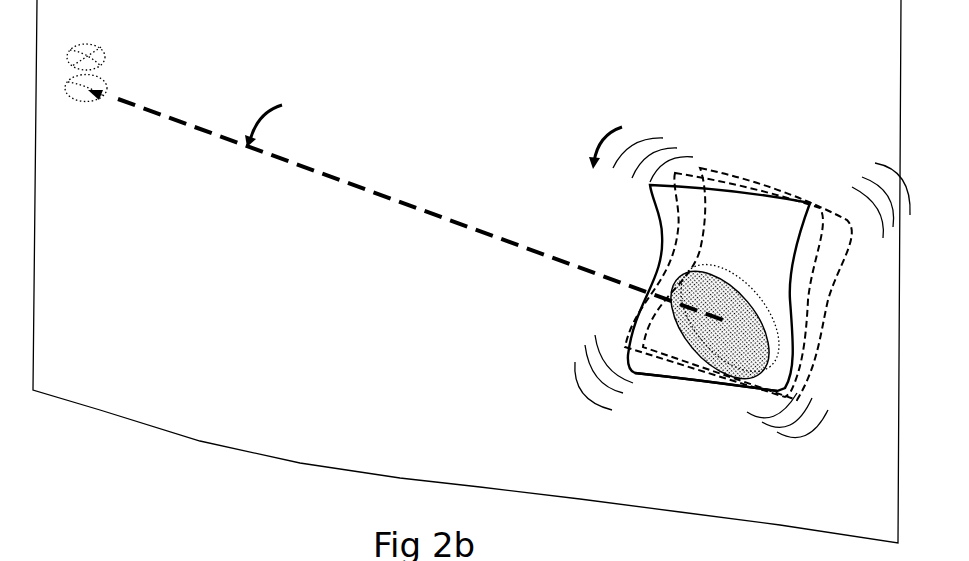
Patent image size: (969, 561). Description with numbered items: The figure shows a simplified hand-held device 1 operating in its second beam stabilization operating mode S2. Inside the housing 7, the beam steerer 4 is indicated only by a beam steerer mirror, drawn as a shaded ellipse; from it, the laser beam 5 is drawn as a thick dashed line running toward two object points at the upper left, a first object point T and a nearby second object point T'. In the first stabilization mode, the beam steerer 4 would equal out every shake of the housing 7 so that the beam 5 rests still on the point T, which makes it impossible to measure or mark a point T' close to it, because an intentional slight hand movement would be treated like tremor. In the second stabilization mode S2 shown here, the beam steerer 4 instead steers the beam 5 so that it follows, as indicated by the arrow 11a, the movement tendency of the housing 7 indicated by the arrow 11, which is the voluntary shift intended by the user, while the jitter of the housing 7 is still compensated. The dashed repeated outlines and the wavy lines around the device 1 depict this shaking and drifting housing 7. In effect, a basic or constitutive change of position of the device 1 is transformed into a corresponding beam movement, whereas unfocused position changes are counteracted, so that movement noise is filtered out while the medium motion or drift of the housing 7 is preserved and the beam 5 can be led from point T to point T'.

The device 1 is at (735, 266).
The beam steerer 4 is at (708, 297).
The laser beam 5 is at (465, 230).
The housing 7 is at (793, 313).
The arrow indicating movement tendency 11 is at (588, 150).
The arrow indicating beam following 11a is at (253, 130).
The second stabilization mode S2 is at (700, 400).
The object point T is at (119, 44).
The object point T' is at (123, 76).